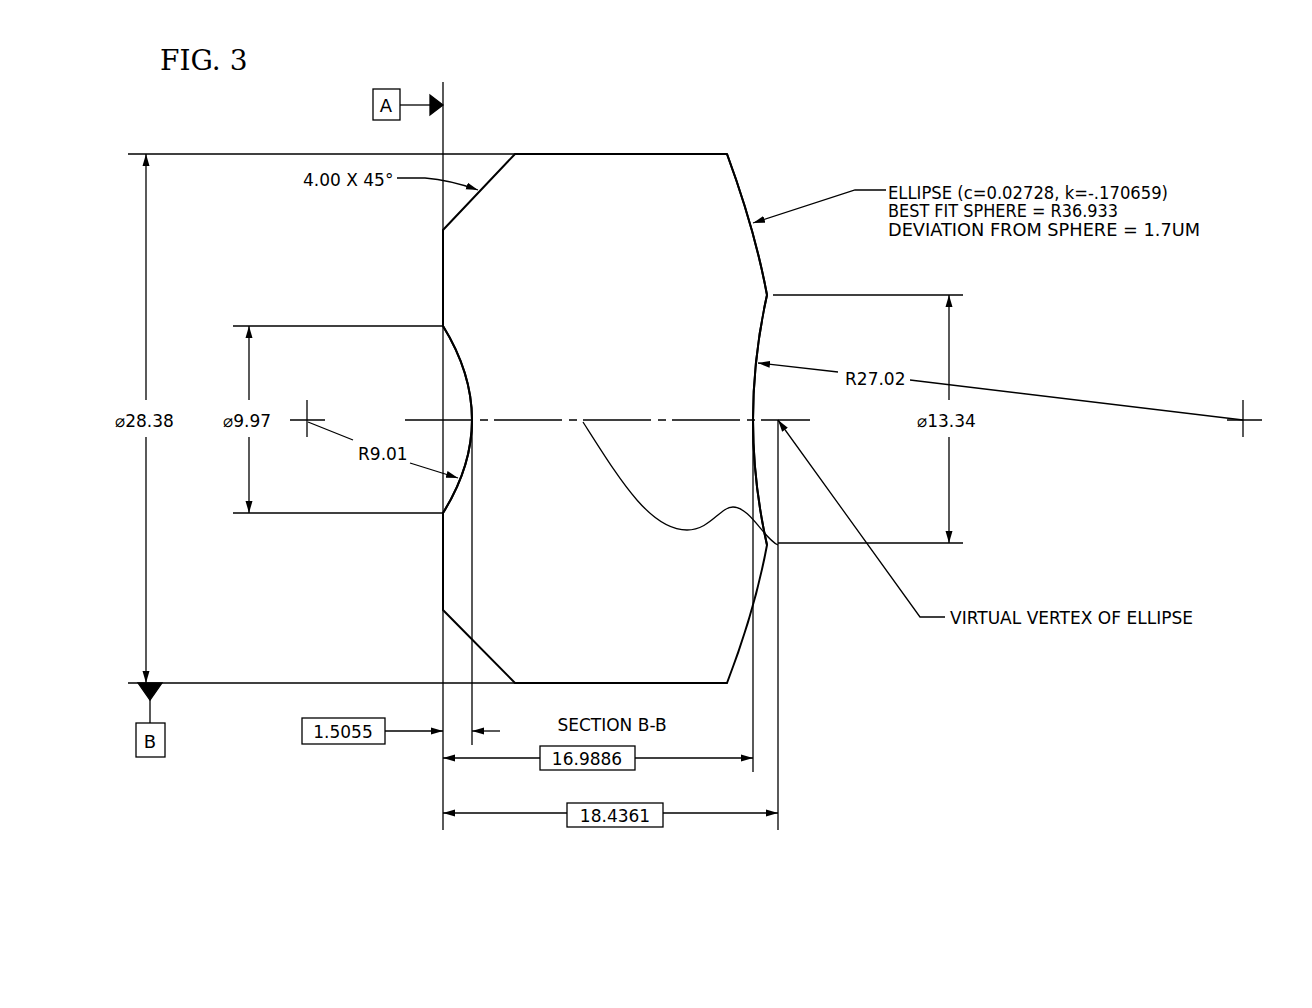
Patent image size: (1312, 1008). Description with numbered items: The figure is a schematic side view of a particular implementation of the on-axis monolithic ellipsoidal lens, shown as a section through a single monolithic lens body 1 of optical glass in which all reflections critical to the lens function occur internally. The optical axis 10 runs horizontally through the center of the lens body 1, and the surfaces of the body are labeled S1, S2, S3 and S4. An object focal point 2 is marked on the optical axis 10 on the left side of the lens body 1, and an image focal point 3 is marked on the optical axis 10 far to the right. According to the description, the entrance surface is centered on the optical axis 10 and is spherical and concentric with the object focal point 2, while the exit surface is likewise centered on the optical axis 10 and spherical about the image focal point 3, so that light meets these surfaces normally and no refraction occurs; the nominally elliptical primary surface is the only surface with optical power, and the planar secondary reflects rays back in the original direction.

The monolithic lens body 1 is at (578, 154).
The object focal point 2 is at (308, 422).
The image focal point 3 is at (1242, 430).
The optical axis 10 is at (778, 545).
The first lens surface S1 is at (462, 365).
The second lens surface (ellipse) S2 is at (740, 187).
The third lens surface (flat) S3 is at (443, 267).
The fourth lens surface S4 is at (762, 327).